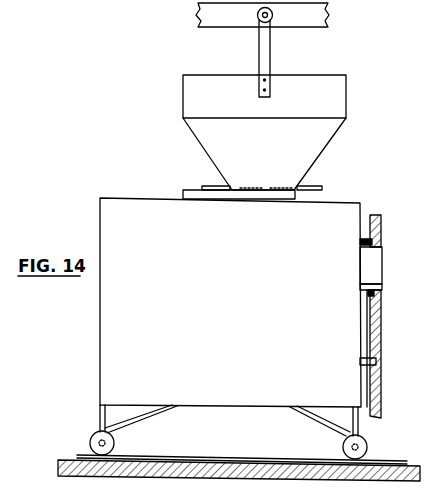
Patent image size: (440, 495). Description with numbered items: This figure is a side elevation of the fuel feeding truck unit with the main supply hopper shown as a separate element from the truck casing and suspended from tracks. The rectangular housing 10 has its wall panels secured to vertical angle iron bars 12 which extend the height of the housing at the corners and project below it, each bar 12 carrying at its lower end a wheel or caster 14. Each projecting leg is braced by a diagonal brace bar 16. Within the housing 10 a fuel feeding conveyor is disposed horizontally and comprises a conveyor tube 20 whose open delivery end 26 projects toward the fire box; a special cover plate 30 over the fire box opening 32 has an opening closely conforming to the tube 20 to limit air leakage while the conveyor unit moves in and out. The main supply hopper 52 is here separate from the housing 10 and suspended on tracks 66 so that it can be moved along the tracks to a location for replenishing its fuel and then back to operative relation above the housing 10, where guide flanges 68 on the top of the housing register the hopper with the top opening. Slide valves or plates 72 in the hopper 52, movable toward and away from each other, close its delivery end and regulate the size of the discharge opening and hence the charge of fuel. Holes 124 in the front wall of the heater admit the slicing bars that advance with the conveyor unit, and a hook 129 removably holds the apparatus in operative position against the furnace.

The housing 10 is at (230, 302).
The vertical angle iron bar 12 is at (100, 417).
The wheel or caster 14 is at (115, 444).
The diagonal brace bar 16 is at (160, 412).
The conveyor tube 20 is at (369, 260).
The open delivery end 26 is at (383, 280).
The cover plate 30 is at (366, 297).
The fire box opening 32 is at (376, 292).
The main supply hopper 52 is at (197, 138).
The tracks 66 is at (285, 25).
The guide flanges 68 is at (185, 191).
The slide valve or gate 72 is at (208, 185).
The holes in the front wall of the heater 124 is at (377, 361).
The hook 129 is at (368, 385).